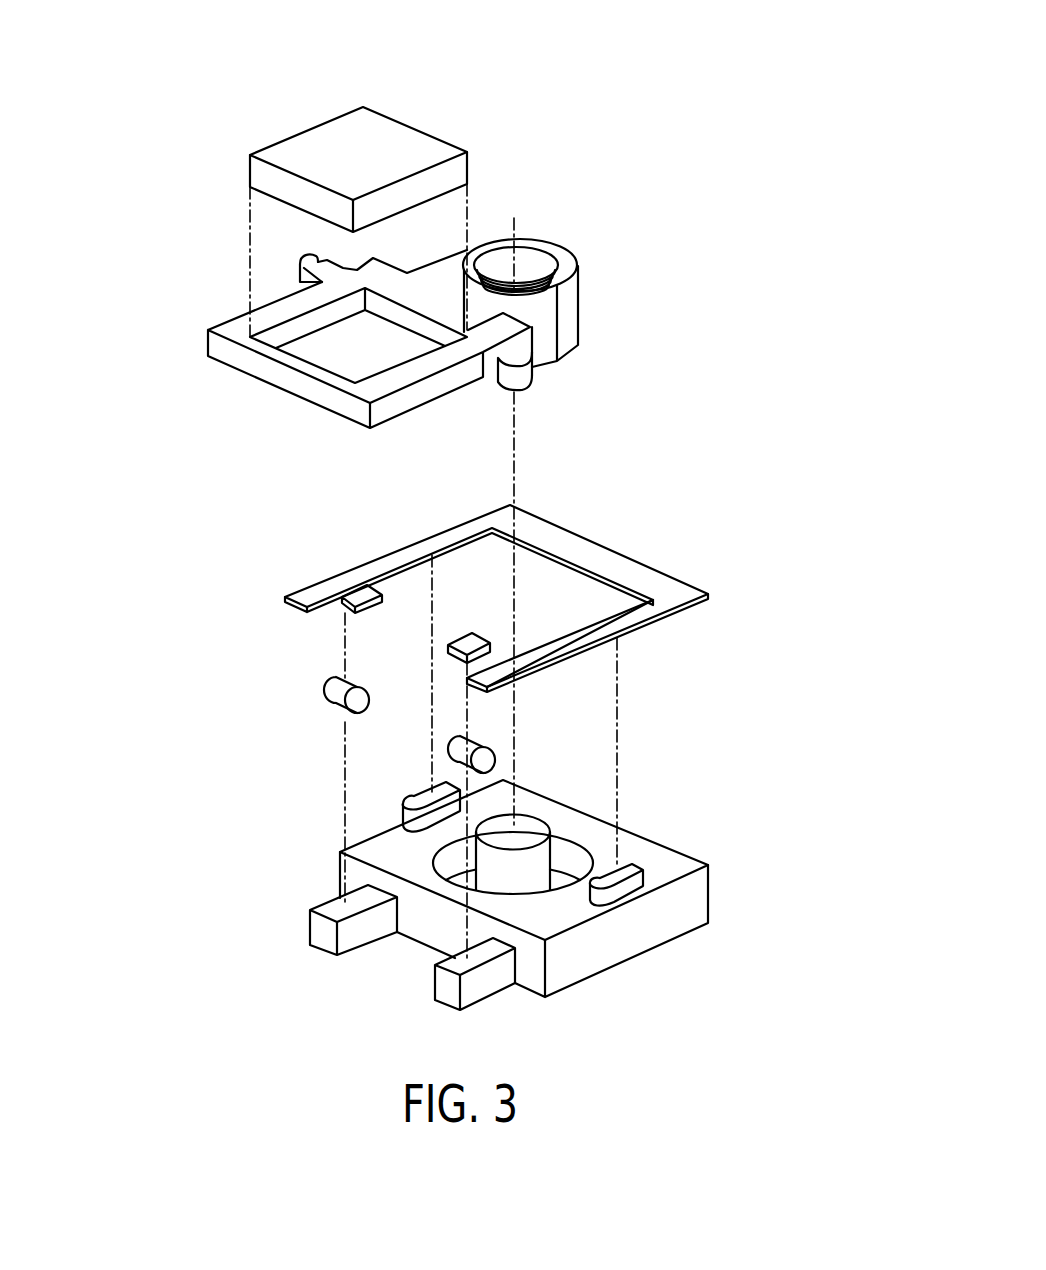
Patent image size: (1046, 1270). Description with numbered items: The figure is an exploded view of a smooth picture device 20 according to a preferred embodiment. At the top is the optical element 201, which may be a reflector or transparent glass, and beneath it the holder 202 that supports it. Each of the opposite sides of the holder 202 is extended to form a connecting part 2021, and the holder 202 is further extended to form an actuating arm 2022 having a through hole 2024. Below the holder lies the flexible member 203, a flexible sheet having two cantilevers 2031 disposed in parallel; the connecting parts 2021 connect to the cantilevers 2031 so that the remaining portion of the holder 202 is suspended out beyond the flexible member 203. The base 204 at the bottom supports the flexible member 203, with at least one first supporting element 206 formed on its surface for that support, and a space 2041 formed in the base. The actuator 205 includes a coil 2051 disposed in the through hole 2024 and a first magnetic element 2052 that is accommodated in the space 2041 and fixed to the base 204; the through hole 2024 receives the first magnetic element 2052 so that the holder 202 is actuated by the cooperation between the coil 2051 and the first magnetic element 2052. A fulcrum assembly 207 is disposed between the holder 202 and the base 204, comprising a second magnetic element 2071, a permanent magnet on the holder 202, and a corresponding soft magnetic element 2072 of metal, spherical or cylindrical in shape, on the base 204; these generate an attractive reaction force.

The smooth picture device 20 is at (180, 42).
The optical element 201 is at (403, 125).
The holder 202 is at (425, 314).
The connecting part 2021 is at (318, 266).
The actuating arm 2022 is at (560, 273).
The through hole 2024 is at (531, 258).
The flexible member 203 is at (670, 575).
The cantilever 2031 is at (573, 642).
The base 204 is at (543, 872).
The space 2041 is at (563, 860).
The actuator 205 is at (832, 130).
The coil 2051 is at (487, 262).
The first magnetic element 2052 is at (531, 828).
The first supporting element 206 is at (625, 892).
The fulcrum assembly 207 is at (72, 580).
The second magnetic element 2071 is at (342, 601).
The soft magnetic element 2072 is at (330, 700).